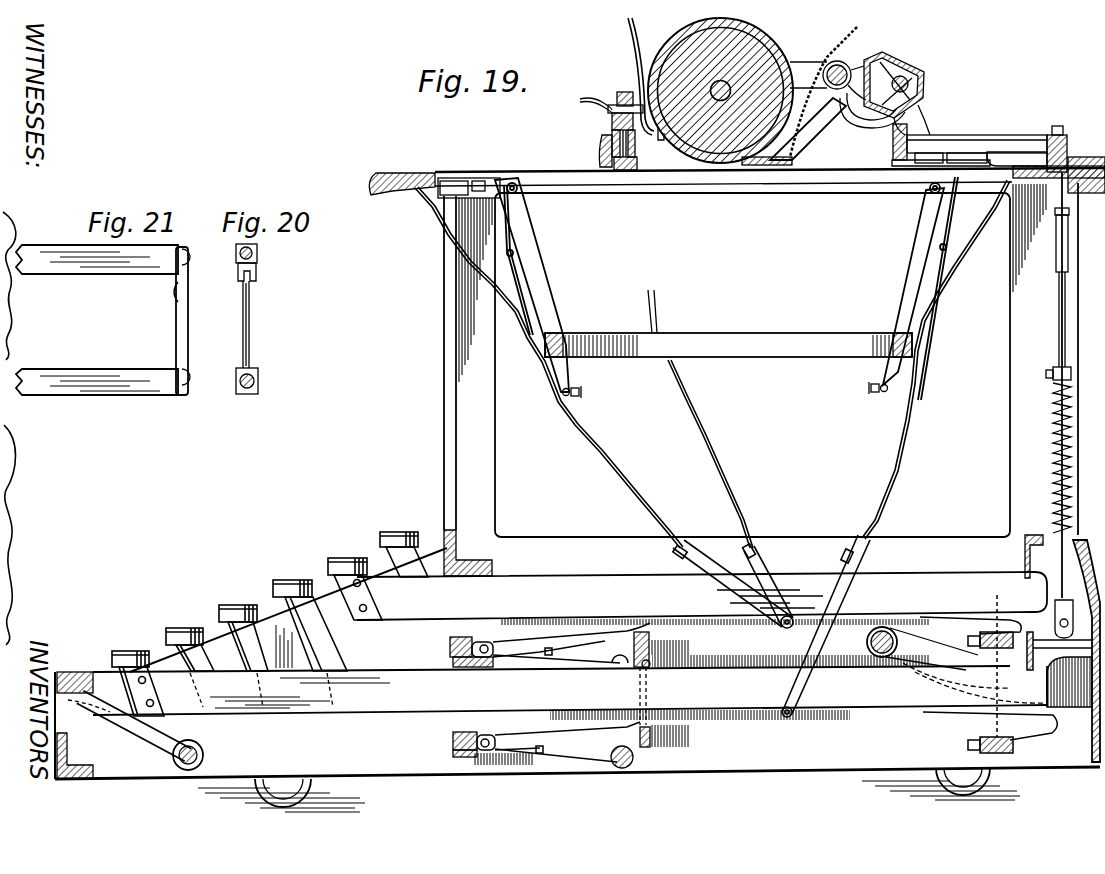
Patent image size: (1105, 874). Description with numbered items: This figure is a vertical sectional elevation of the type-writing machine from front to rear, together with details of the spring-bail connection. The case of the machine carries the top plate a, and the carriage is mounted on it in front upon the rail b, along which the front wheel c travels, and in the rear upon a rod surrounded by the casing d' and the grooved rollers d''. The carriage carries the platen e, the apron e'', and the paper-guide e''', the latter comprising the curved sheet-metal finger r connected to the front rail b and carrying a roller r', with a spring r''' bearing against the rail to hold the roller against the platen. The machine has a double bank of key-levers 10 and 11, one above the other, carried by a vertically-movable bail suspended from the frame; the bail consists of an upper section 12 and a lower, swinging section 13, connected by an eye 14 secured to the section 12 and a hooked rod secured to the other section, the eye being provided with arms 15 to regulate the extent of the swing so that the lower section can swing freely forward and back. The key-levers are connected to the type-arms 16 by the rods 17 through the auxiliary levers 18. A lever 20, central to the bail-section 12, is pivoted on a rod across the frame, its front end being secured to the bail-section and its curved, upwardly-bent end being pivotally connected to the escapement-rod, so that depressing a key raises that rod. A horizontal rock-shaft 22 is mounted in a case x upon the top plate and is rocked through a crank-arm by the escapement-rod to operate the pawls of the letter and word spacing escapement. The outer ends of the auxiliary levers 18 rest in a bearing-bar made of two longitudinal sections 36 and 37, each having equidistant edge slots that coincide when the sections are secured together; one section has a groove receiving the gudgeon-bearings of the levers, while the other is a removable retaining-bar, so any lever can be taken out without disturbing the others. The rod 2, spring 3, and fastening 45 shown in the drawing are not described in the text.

In FIG. 19, the top plate a is at (737, 342).
In FIG. 19, the rail b is at (636, 159).
In FIG. 19, the front wheel c is at (600, 134).
In FIG. 19, the curved sheet-metal finger r is at (642, 72).
In FIG. 19, the roller r' is at (669, 149).
In FIG. 19, the spring r''' is at (594, 92).
In FIG. 19, the platen e is at (720, 90).
In FIG. 19, the apron e'' is at (823, 87).
In FIG. 19, the paper-guide e''' is at (626, 78).
In FIG. 19, the casing d' is at (911, 83).
In FIG. 19, the grooved rollers d'' is at (910, 108).
In FIG. 19, the case x is at (969, 137).
In FIG. 19, the horizontal rock-shaft 22 is at (1071, 146).
In FIG. 19, the rod 2 is at (1070, 351).
In FIG. 19, the spring 3 is at (1070, 443).
In FIG. 19, the type-arms 16 is at (726, 288).
In FIG. 19, the rods 17 is at (712, 448).
In FIG. 19, the bolt 45 is at (725, 389).
In FIG. 19, the key-levers 10 is at (588, 610).
In FIG. 19, the key-levers 11 is at (577, 715).
In FIG. 19, the upper bail-section 12 is at (650, 632).
In FIG. 20, the upper bail-section 12 is at (261, 250).
In FIG. 21, the upper bail-section 12 is at (97, 270).
In FIG. 19, the lower swinging bail-section 13 is at (660, 748).
In FIG. 20, the lower swinging bail-section 13 is at (262, 381).
In FIG. 21, the lower swinging bail-section 13 is at (97, 368).
In FIG. 19, the eye 14 is at (642, 667).
In FIG. 20, the eye 14 is at (262, 271).
In FIG. 20, the arms 15 is at (256, 296).
In FIG. 21, the arms 15 is at (188, 298).
In FIG. 19, the auxiliary levers 18 is at (782, 678).
In FIG. 19, the lever 20 is at (935, 665).
In FIG. 19, the bearing-bar section 36 is at (451, 686).
In FIG. 19, the bearing-bar section 37 is at (459, 707).